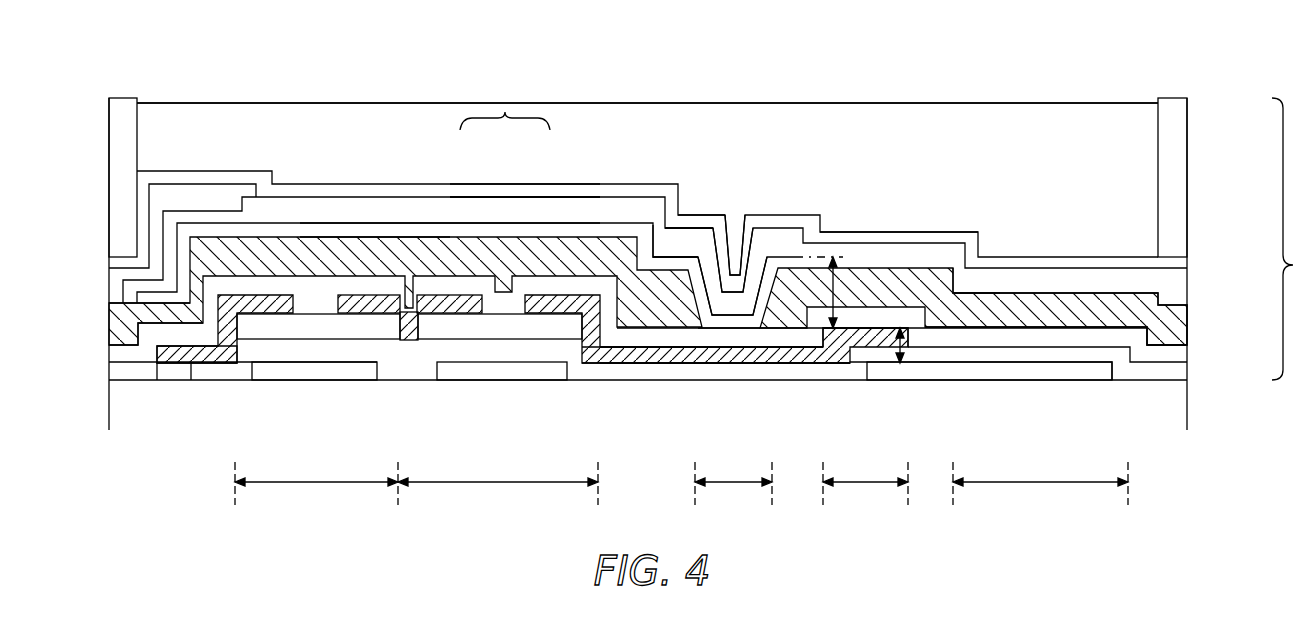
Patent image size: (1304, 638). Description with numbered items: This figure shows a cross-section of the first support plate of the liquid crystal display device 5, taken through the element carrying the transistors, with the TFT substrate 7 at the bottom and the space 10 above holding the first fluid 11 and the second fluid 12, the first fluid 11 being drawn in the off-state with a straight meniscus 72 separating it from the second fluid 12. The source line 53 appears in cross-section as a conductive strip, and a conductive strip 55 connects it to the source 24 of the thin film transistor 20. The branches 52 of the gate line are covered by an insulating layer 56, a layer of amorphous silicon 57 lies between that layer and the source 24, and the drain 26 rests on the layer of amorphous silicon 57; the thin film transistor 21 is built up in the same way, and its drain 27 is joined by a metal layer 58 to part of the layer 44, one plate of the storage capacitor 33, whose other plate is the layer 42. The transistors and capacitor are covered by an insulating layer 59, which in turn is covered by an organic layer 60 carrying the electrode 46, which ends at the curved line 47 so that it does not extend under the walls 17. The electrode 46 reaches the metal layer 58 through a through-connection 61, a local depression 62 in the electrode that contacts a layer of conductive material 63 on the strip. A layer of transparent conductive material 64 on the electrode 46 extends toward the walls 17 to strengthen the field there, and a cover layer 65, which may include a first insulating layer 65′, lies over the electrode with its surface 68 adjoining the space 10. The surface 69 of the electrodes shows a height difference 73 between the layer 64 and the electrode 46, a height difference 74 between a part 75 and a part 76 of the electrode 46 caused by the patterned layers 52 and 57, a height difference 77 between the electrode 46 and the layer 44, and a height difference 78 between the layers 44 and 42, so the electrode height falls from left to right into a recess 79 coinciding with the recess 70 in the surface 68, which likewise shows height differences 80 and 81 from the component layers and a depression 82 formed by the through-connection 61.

The liquid crystal display device 5 is at (1288, 239).
The TFT substrate 7 is at (1175, 405).
The space 10 is at (650, 48).
The first fluid 11 is at (650, 121).
The second fluid 12 is at (647, 85).
The walls 17 is at (109, 97).
The thin film transistor 20 is at (316, 490).
The thin film transistor 21 is at (498, 490).
The source 24 is at (262, 303).
The drain 26 is at (363, 306).
The drain 27 is at (546, 305).
The storage capacitor 33 is at (865, 490).
The layer 42 is at (985, 372).
The layer 44 is at (870, 345).
The electrode 46 is at (393, 230).
The curved line 47 is at (955, 285).
The branches 52 is at (325, 372).
The source line 53 is at (176, 372).
The conductive strip 55 is at (215, 352).
The insulating layer 56 is at (410, 355).
The layer of amorphous silicon 57 is at (292, 326).
The metal layer 58 is at (647, 355).
The insulating layer 59 is at (608, 335).
The layer 60 is at (127, 323).
The through-connection 61 is at (733, 490).
The local depression 62 is at (697, 332).
The layer of conductive material 63 is at (737, 333).
The layer of transparent conductive material 64 is at (218, 217).
The cover layer 65 is at (505, 112).
The first insulating layer 65′ is at (518, 211).
The surface 68 is at (897, 232).
The surface 69 is at (450, 225).
The recess 70 is at (1040, 490).
The meniscus 72 is at (751, 96).
The height difference 73 is at (242, 213).
The height difference 74 is at (655, 232).
The part 75 is at (630, 225).
The part 76 is at (686, 245).
The height difference 77 is at (846, 257).
The height difference 78 is at (905, 352).
The recess 79 is at (1040, 490).
The height difference 80 is at (272, 182).
The height difference 81 is at (683, 215).
The depression 82 is at (733, 228).